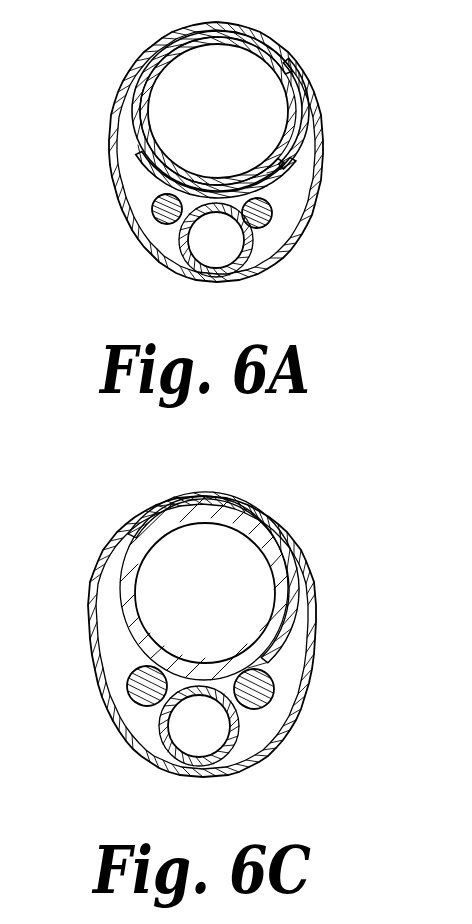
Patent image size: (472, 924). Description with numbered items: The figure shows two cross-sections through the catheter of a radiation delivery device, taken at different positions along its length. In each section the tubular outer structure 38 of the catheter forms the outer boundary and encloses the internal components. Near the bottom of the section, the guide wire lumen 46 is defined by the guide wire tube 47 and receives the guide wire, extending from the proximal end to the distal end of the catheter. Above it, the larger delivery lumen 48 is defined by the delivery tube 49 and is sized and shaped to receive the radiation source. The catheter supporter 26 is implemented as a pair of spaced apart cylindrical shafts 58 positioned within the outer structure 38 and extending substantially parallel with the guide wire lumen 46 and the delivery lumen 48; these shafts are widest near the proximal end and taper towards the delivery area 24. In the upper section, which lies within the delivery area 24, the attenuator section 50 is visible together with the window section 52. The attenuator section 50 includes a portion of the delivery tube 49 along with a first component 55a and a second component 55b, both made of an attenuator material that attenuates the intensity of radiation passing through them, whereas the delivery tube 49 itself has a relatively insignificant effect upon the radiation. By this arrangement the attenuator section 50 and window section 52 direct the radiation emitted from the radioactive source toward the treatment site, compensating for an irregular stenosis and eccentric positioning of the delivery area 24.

In FIG. 6A, the delivery area 24 is at (299, 56).
In FIG. 6A, the catheter supporter 26 is at (147, 213).
In FIG. 6C, the catheter supporter 26 is at (127, 700).
In FIG. 6A, the tubular outer structure 38 is at (300, 222).
In FIG. 6C, the tubular outer structure 38 is at (291, 714).
In FIG. 6A, the guide wire lumen 46 is at (198, 243).
In FIG. 6C, the guide wire lumen 46 is at (178, 733).
In FIG. 6A, the guide wire tube 47 is at (200, 268).
In FIG. 6C, the guide wire tube 47 is at (187, 766).
In FIG. 6A, the delivery lumen 48 is at (172, 102).
In FIG. 6C, the delivery lumen 48 is at (150, 587).
In FIG. 6A, the delivery tube 49 is at (150, 84).
In FIG. 6C, the delivery tube 49 is at (146, 540).
In FIG. 6A, the attenuator section 50 is at (204, 176).
In FIG. 6A, the window section 52 is at (214, 45).
In FIG. 6A, the first component 55a is at (303, 125).
In FIG. 6A, the second component 55b is at (291, 172).
In FIG. 6A, the cylindrical shafts 58 is at (263, 212).
In FIG. 6C, the cylindrical shafts 58 is at (262, 691).